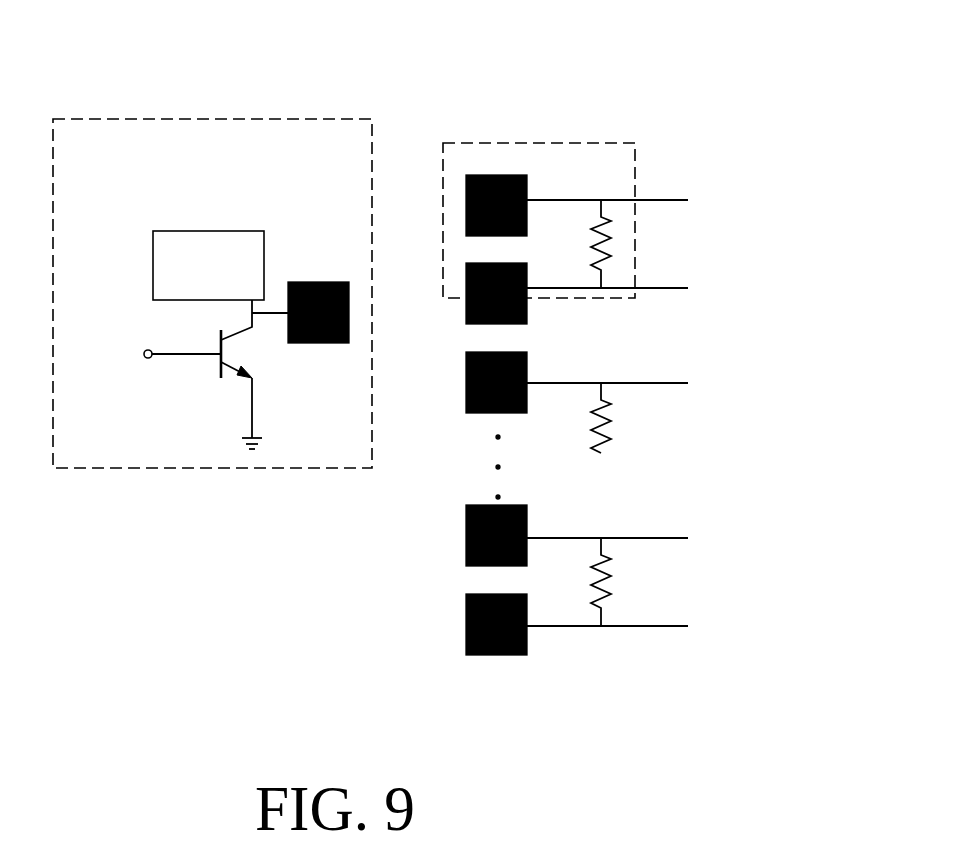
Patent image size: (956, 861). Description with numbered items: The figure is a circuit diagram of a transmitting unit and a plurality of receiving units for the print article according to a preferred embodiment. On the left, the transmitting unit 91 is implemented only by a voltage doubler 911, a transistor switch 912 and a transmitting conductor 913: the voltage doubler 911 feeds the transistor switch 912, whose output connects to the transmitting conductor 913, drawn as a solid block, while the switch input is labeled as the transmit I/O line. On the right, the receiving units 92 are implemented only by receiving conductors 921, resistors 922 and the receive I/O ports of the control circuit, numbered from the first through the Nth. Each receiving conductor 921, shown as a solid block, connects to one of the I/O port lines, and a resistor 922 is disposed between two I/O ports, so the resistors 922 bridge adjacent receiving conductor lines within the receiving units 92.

The transmitting unit 91 is at (163, 118).
The voltage doubler 911 is at (180, 231).
The transistor switch 912 is at (221, 372).
The transmitting conductor 913 is at (315, 282).
The receiving units 92 is at (567, 143).
The receiving conductors 921 is at (494, 175).
The resistors 922 is at (612, 262).